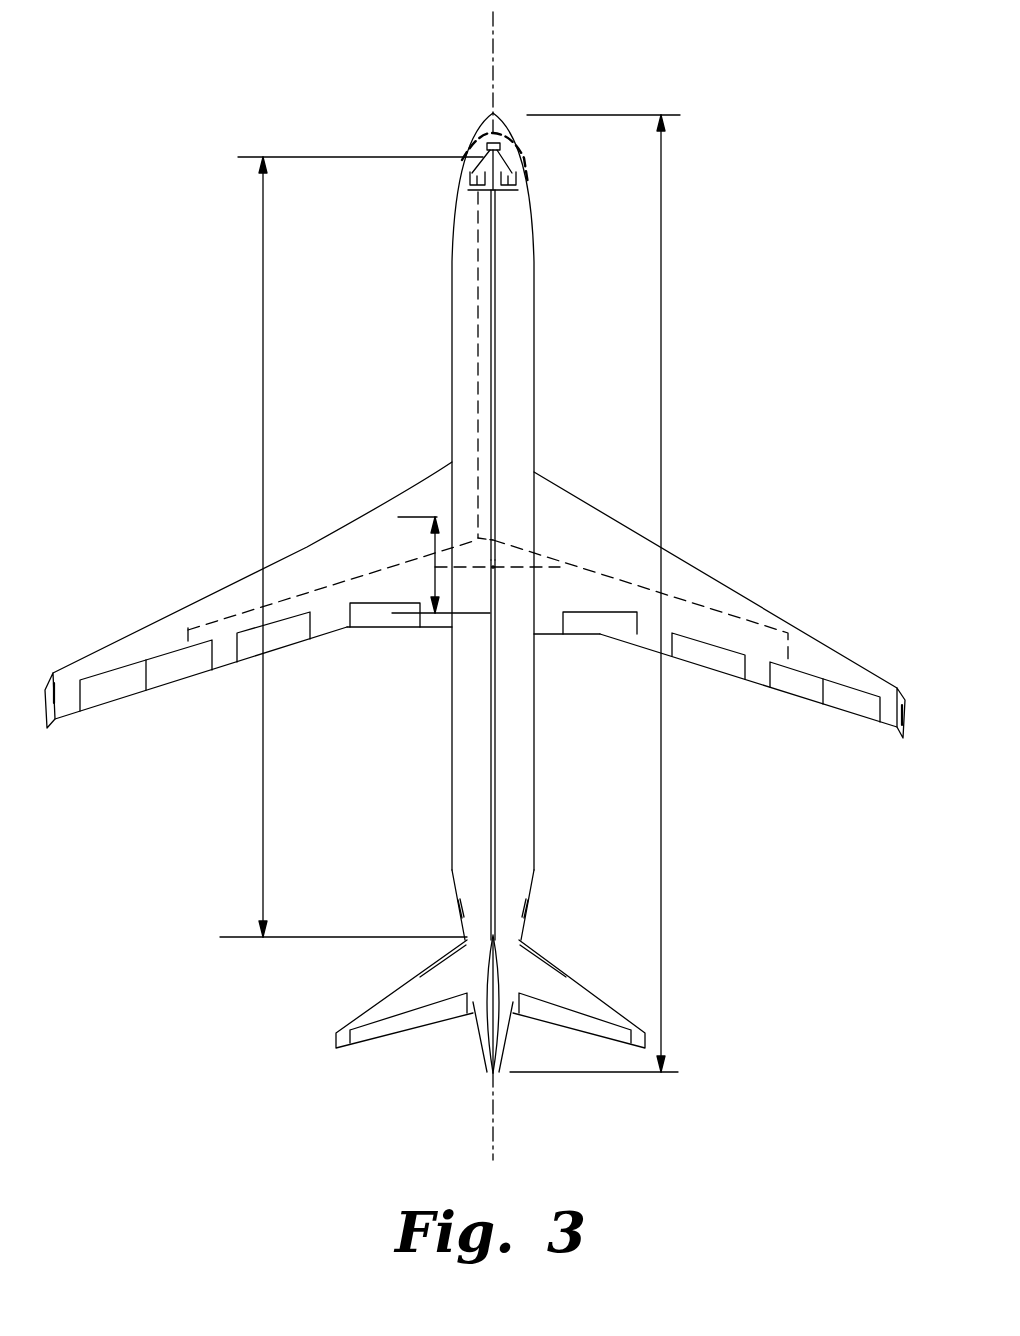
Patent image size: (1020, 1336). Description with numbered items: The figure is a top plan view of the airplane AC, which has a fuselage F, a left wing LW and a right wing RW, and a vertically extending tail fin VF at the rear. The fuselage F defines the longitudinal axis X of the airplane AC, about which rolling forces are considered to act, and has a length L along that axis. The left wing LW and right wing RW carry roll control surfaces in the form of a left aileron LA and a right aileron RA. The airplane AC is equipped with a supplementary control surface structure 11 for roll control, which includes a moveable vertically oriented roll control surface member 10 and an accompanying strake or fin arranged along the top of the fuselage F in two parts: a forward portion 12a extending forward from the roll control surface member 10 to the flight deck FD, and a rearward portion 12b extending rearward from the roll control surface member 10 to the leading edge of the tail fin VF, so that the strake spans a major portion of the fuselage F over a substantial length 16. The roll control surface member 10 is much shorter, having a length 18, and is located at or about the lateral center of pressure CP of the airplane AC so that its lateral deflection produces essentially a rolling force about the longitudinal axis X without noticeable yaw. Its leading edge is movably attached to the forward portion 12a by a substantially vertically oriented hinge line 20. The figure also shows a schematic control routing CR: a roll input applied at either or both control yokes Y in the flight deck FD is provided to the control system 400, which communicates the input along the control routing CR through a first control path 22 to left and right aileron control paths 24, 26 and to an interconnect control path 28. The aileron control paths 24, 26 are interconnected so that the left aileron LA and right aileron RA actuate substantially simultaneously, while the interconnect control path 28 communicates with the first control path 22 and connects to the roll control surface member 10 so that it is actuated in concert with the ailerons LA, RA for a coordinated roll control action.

The longitudinal axis X is at (490, 46).
The control yoke Y is at (503, 195).
The control system 400 is at (470, 148).
The flight deck FD is at (522, 160).
The airplane AC is at (452, 246).
The fuselage F is at (534, 330).
The supplementary control surface structure 11 is at (502, 390).
The forward portion 12a is at (495, 266).
The rearward portion 12b is at (497, 815).
The first control path 22 is at (477, 297).
The control routing CR is at (454, 366).
The hinge line 20 is at (493, 540).
The interconnect control path 28 is at (507, 567).
The right aileron control path 26 is at (600, 577).
The left aileron control path 24 is at (234, 613).
The lateral center of pressure CP is at (493, 577).
The moveable vertically oriented roll control surface member 10 is at (493, 590).
The left wing LW is at (137, 637).
The right wing RW is at (683, 567).
The left aileron LA is at (152, 693).
The right aileron RA is at (803, 702).
The length of the strake or vertically oriented fin 16 is at (262, 490).
The length of the moveable vertically oriented roll control surface member 18 is at (432, 563).
The length of the fuselage L is at (661, 800).
The vertically extending tail fin VF is at (487, 983).